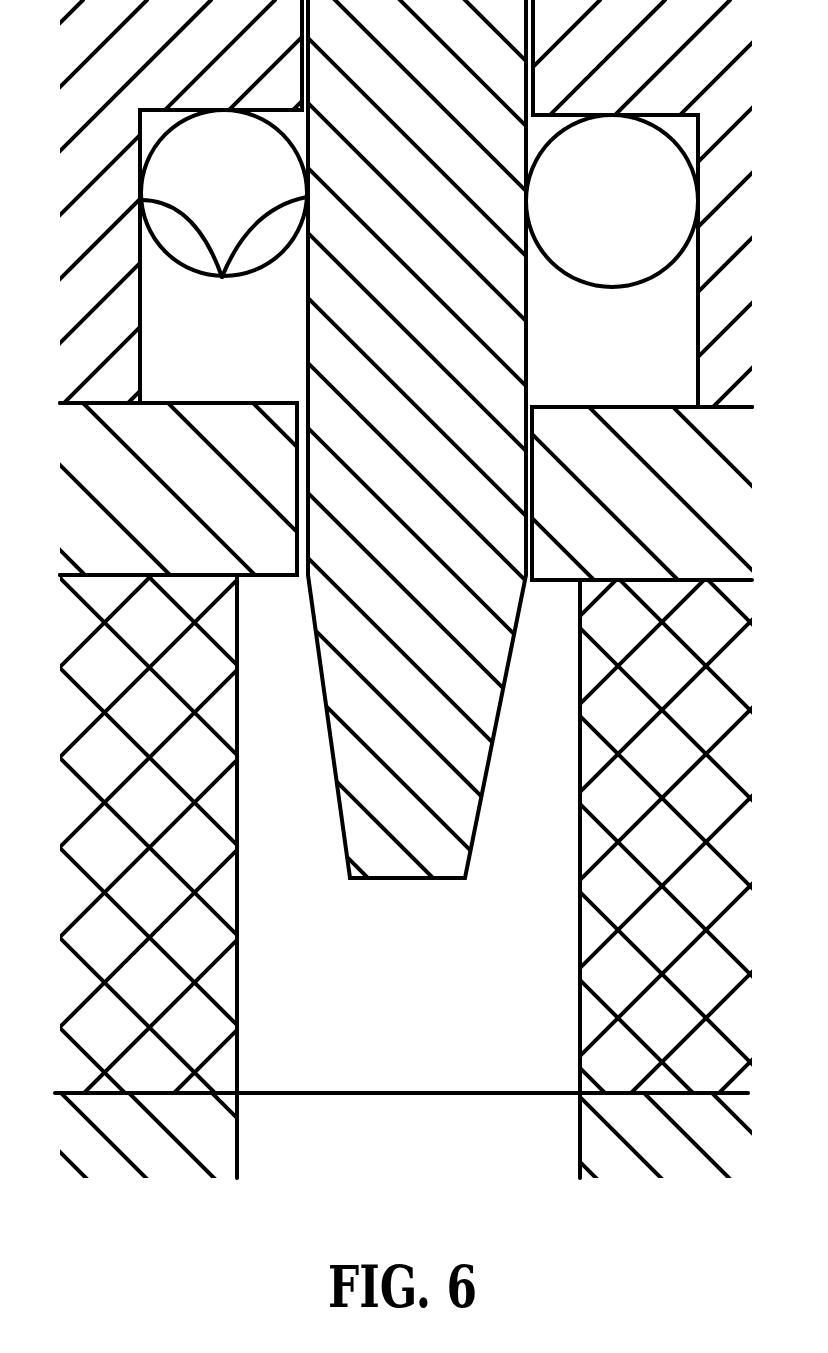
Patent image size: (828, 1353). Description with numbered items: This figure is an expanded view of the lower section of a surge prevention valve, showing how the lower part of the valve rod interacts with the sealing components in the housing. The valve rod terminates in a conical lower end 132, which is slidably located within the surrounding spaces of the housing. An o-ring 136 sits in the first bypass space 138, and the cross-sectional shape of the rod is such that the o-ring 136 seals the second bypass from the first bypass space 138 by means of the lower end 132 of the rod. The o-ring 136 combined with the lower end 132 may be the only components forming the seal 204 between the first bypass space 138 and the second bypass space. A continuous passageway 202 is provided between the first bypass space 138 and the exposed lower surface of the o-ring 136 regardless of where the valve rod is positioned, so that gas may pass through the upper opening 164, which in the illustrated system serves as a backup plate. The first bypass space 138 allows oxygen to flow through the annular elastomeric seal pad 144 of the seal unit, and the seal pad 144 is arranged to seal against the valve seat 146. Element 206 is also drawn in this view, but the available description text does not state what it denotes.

The conical lower end 132 is at (413, 703).
The o-ring 136 is at (627, 237).
The first bypass space 138 is at (408, 1135).
The annular elastomeric seal pad 144 is at (188, 937).
The valve seat 146 is at (184, 1123).
The upper opening 164 is at (613, 475).
The continuous passageway 202 is at (300, 413).
The seal 204 is at (222, 277).
The seal groove 206 is at (548, 264).